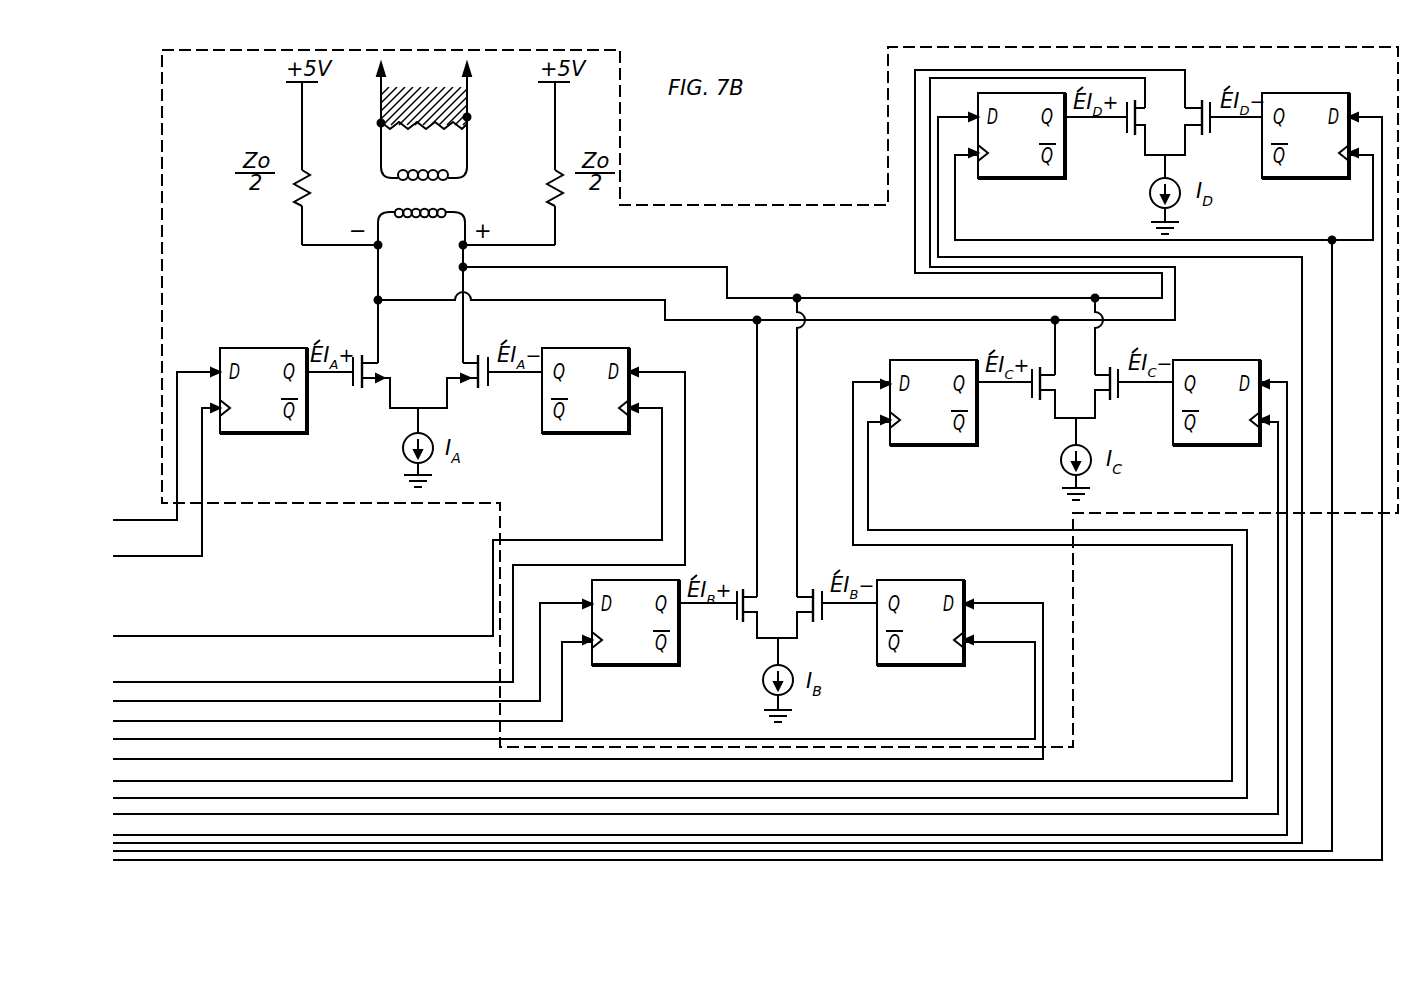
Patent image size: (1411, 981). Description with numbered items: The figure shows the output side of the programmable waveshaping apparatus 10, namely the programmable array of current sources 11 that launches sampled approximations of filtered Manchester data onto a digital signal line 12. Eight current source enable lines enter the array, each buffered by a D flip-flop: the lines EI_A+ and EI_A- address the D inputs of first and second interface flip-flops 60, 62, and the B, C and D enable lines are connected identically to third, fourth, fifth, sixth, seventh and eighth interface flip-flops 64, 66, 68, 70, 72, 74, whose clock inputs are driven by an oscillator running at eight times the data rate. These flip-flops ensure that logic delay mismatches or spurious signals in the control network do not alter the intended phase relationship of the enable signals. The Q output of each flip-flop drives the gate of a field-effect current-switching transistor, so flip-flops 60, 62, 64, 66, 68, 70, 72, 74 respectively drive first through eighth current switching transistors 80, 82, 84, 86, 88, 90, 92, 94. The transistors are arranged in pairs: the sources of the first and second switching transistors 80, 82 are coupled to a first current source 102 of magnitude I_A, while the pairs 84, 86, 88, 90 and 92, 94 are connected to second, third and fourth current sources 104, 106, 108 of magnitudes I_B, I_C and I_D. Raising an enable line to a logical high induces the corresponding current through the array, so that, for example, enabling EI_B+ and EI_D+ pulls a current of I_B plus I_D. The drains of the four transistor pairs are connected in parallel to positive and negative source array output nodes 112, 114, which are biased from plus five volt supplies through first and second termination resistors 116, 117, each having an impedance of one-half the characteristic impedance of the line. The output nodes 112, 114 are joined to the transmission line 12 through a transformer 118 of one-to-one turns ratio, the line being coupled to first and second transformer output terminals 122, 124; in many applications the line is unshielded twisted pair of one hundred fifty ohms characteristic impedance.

The programmable waveshaping apparatus 10 is at (720, 145).
The programmable array of current sources 11 is at (780, 397).
The digital signal line 12 is at (428, 115).
The first interface flip-flop 60 is at (259, 373).
The second interface flip-flop 62 is at (590, 373).
The third interface flip-flop 64 is at (632, 648).
The fourth interface flip-flop 66 is at (925, 644).
The fifth interface flip-flop 68 is at (929, 424).
The sixth interface flip-flop 70 is at (1221, 424).
The seventh interface flip-flop 72 is at (1017, 159).
The eighth interface flip-flop 74 is at (1310, 159).
The first current switching transistor 80 is at (362, 405).
The second current switching transistor 82 is at (480, 400).
The third current switching transistor 84 is at (729, 589).
The fourth current switching transistor 86 is at (827, 589).
The fifth current switching transistor 88 is at (1026, 395).
The sixth current switching transistor 90 is at (1124, 400).
The seventh current switching transistor 92 is at (1116, 131).
The eighth current switching transistor 94 is at (1213, 132).
The first current source 102 is at (382, 464).
The second current source 104 is at (746, 689).
The third current source 106 is at (1045, 467).
The fourth current source 108 is at (1128, 201).
The positive source array output node 112 is at (435, 267).
The negative source array output node 114 is at (346, 267).
The first termination resistor 116 is at (585, 206).
The second termination resistor 117 is at (266, 203).
The transformer 118 is at (452, 206).
The first transformer output terminal 122 is at (491, 137).
The second transformer output terminal 124 is at (354, 140).